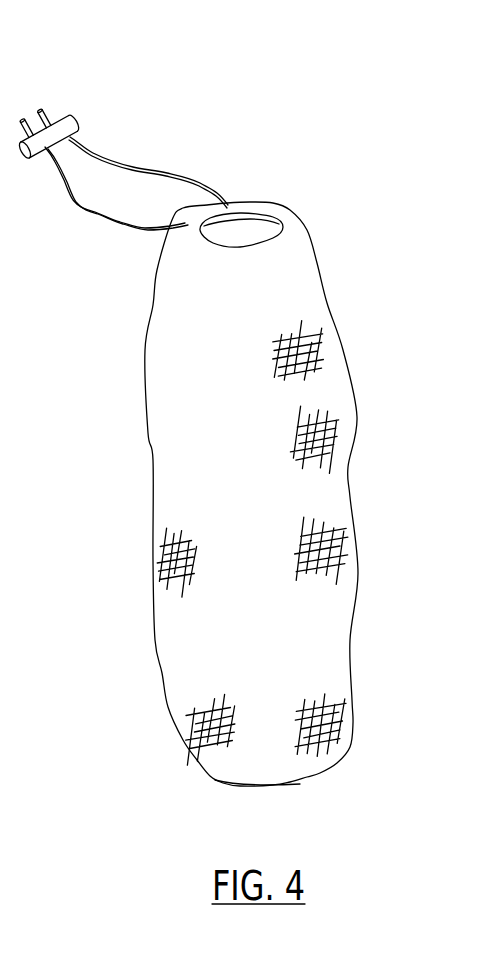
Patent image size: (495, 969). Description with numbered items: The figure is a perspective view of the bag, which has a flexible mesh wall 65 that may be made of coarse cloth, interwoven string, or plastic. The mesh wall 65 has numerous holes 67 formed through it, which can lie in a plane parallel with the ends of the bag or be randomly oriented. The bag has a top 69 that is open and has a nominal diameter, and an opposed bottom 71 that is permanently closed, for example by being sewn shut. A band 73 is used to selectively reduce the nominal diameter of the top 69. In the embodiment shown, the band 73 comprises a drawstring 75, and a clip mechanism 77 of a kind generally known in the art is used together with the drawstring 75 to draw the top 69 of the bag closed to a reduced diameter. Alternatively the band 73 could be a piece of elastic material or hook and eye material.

The mesh wall 65 is at (308, 500).
The holes 67 is at (172, 578).
The top 69 is at (265, 208).
The bottom 71 is at (228, 785).
The band 73 is at (156, 155).
The drawstring 75 is at (130, 227).
The clip mechanism 77 is at (63, 120).